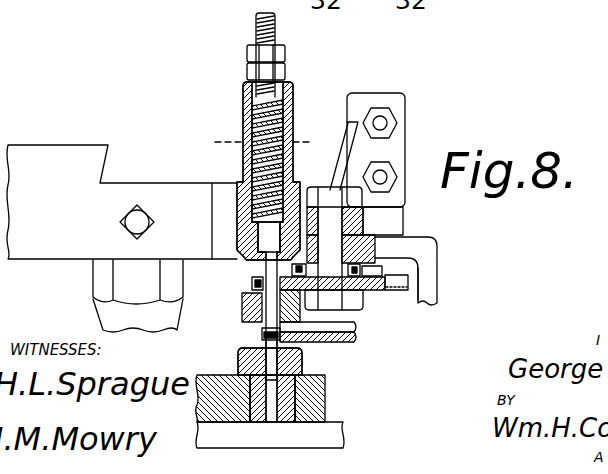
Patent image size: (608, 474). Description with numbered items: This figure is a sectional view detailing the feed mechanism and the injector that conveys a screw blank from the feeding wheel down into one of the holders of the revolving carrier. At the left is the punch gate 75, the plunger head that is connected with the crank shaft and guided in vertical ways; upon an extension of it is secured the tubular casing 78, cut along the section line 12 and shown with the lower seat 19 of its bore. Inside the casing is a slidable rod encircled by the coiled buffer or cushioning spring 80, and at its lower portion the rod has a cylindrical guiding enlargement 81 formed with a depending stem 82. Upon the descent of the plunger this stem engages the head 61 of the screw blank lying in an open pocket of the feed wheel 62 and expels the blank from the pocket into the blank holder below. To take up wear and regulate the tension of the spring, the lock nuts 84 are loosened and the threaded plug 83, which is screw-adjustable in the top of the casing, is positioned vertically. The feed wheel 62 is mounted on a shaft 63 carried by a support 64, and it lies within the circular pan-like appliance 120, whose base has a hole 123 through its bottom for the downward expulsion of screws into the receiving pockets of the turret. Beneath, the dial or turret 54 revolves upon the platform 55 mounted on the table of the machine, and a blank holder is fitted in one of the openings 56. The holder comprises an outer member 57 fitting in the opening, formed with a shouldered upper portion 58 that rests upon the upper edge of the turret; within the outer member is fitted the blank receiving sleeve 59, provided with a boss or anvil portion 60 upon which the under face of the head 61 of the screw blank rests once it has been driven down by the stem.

The section line 12 is at (267, 141).
The spring seat 19 is at (282, 127).
The dial or turret 54 is at (325, 413).
The platform 55 is at (330, 437).
The vertical openings 56 is at (302, 395).
The outer member 57 is at (245, 388).
The shouldered upper portion 58 is at (242, 362).
The blank receiving sleeve 59 is at (302, 362).
The boss or anvil portion 60 is at (262, 343).
The head of the screw blank 61 is at (262, 329).
The feed wheel 62 is at (398, 282).
The shaft 63 is at (376, 242).
The support 64 is at (427, 257).
The punch gate 75 is at (122, 238).
The tubular casing 78 is at (291, 88).
The coiled buffer or cushioning spring 80 is at (250, 107).
The cylindrical guiding enlargement 81 is at (262, 240).
The depending stem 82 is at (264, 273).
The threaded plug 83 is at (276, 33).
The lock nuts 84 is at (247, 72).
The pan-like appliance 120 is at (376, 288).
The hole 123 is at (347, 311).